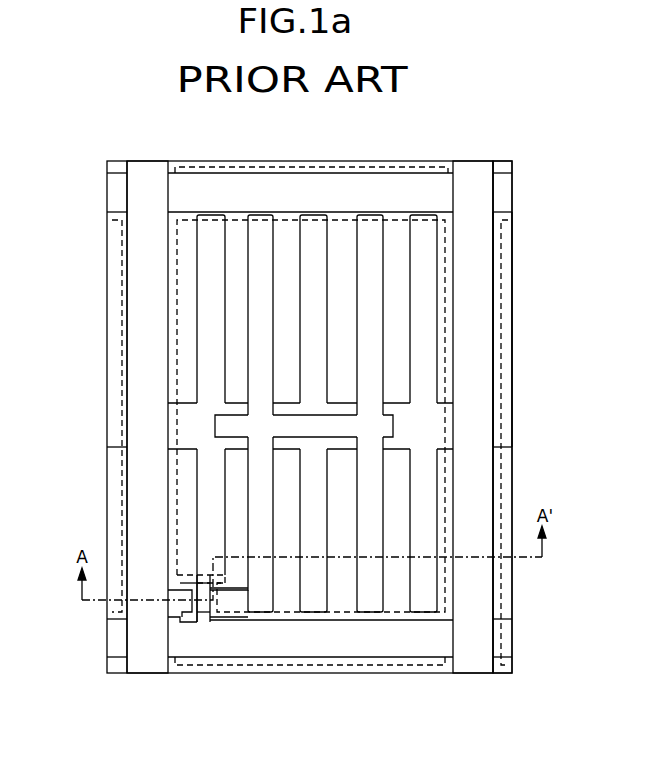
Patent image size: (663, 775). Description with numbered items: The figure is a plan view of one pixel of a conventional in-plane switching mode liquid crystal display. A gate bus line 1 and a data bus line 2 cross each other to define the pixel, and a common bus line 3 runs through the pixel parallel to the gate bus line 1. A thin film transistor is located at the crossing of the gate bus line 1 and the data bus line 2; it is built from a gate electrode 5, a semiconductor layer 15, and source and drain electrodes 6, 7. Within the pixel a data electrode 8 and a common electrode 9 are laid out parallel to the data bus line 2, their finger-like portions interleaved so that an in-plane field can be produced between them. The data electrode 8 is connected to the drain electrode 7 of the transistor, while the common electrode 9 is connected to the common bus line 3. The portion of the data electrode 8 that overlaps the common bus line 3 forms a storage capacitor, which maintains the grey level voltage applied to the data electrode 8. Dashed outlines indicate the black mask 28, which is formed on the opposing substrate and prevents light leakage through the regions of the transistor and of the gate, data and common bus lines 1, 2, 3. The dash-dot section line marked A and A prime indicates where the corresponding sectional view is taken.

The gate bus line 1 is at (497, 637).
The data bus line 2 is at (472, 655).
The common bus line 3 is at (507, 437).
The gate electrode 5 is at (197, 622).
The source electrode 6 is at (180, 602).
The drain electrode 7 is at (212, 607).
The data electrode 8 is at (372, 602).
The common electrode 9 is at (317, 603).
The semiconductor layer 15 is at (180, 573).
The black mask 28 is at (501, 483).